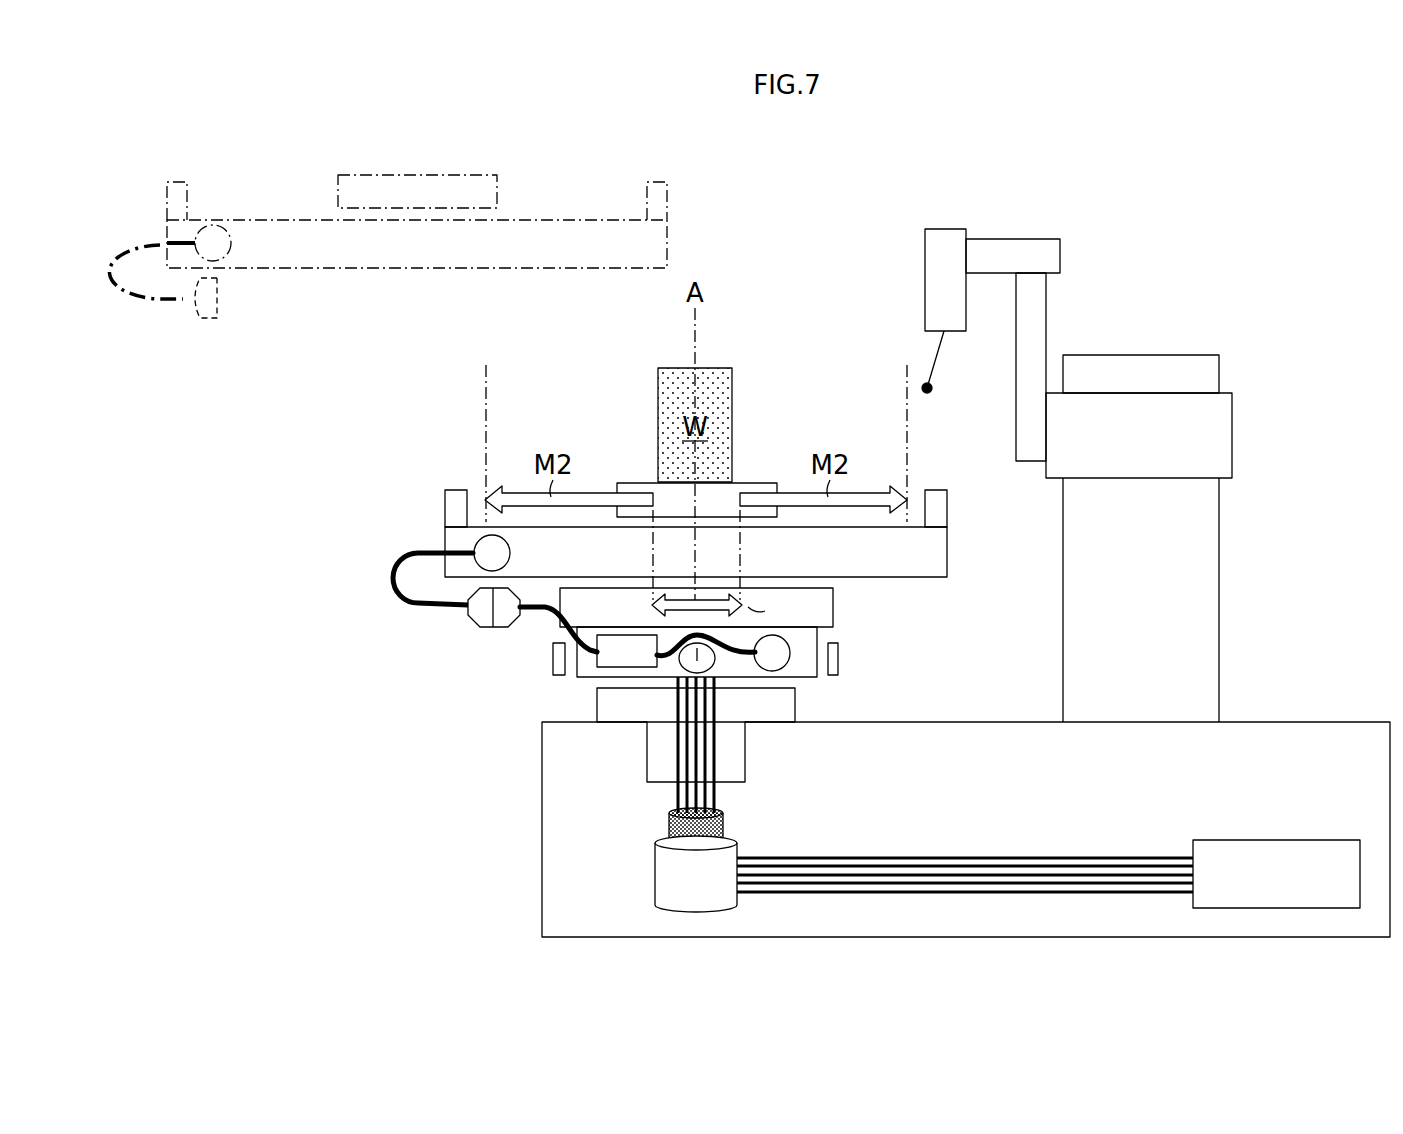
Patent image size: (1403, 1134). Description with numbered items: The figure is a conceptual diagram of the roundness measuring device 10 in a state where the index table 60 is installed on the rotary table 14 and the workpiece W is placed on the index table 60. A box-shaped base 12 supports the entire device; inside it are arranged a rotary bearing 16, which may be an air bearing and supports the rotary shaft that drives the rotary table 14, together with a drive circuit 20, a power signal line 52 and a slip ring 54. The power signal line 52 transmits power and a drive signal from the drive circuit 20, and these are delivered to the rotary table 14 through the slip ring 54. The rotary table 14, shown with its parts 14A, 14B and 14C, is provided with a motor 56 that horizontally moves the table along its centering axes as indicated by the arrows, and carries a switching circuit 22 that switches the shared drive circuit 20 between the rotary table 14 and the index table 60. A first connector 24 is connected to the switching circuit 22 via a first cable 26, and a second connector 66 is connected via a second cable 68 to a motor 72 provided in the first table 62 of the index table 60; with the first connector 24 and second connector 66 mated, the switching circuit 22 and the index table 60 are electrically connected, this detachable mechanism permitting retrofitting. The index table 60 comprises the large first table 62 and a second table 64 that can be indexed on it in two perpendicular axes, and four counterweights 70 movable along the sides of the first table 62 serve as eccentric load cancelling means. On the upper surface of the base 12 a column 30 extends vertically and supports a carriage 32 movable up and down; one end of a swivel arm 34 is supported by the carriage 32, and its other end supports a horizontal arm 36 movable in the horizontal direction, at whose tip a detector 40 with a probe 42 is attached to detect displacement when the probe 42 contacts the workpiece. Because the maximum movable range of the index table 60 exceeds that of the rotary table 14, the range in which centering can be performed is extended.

The roundness measuring device 10 is at (968, 137).
The base 12 is at (977, 938).
The rotary table 14 is at (850, 617).
The stage guide 14A is at (840, 658).
The rotary joint 14B is at (705, 661).
The stage guide 14C is at (553, 660).
The rotary bearing 16 is at (787, 703).
The drive circuit 20 is at (1277, 843).
The switching circuit 22 is at (627, 660).
The first connector 24 is at (505, 623).
The first cable 26 is at (545, 612).
The column 30 is at (1180, 358).
The carriage 32 is at (1230, 437).
The swivel arm 34 is at (1040, 296).
The horizontal arm 36 is at (1010, 240).
The detector 40 is at (915, 268).
The probe 42 is at (935, 358).
The power signal line 52 is at (962, 858).
The slip ring 54 is at (655, 877).
The motor 56 is at (780, 641).
The index table 60 is at (610, 408).
The first table 62 is at (947, 552).
The second table 64 is at (752, 484).
The second connector 66 is at (478, 619).
The second cable 68 is at (392, 580).
The counterweight 70 is at (455, 490).
The motor 72 is at (512, 552).